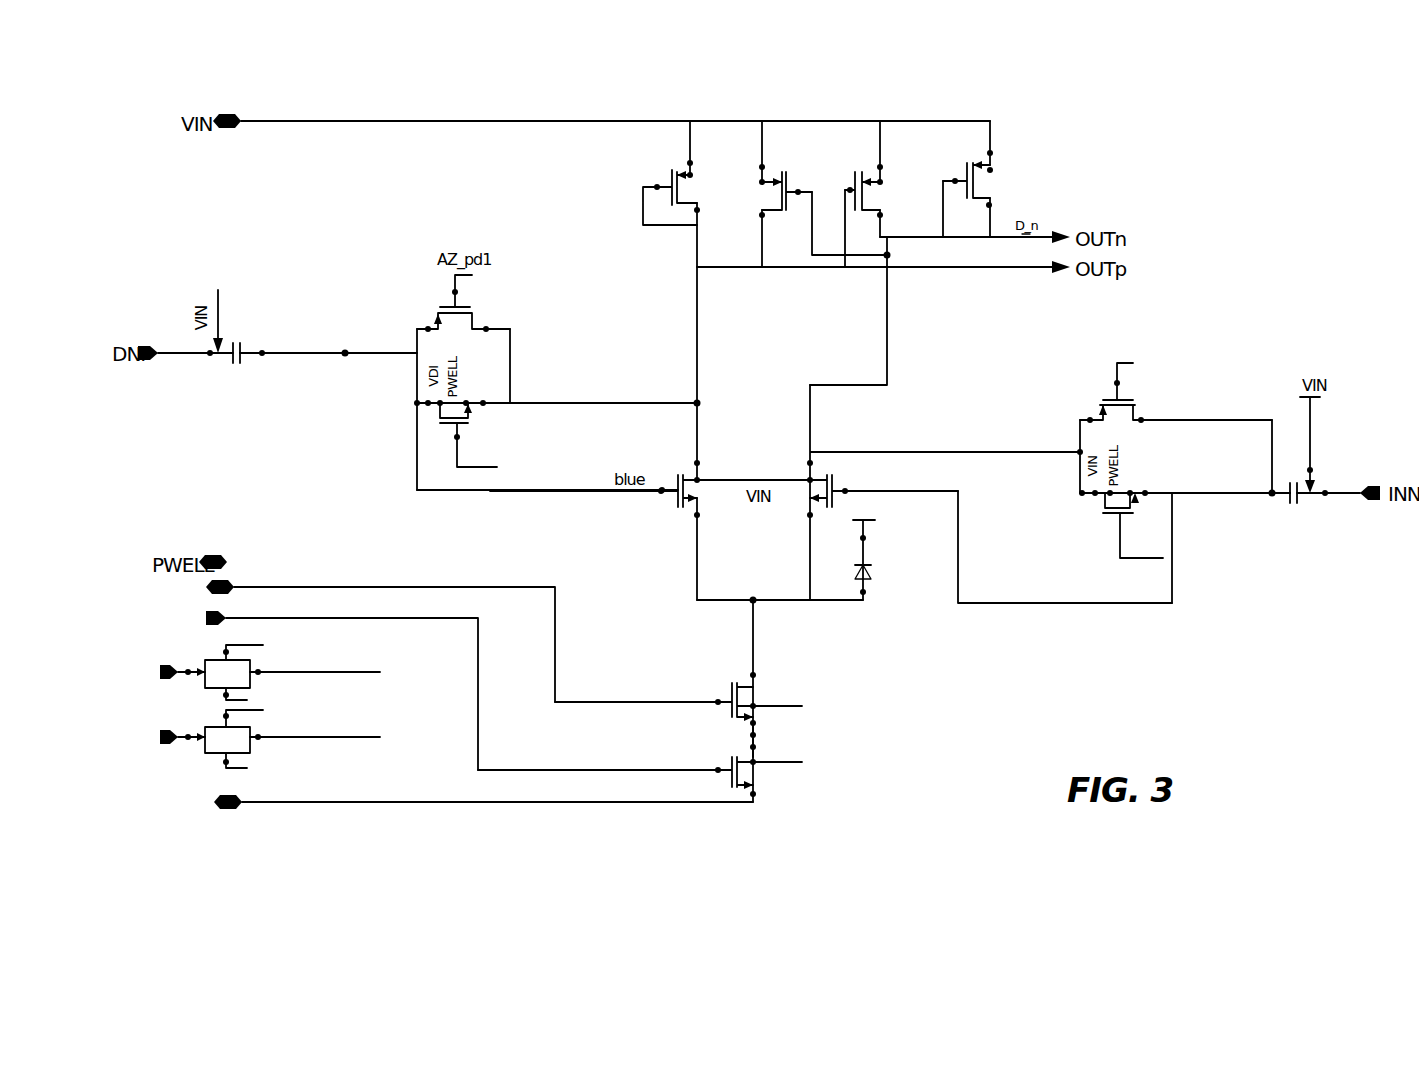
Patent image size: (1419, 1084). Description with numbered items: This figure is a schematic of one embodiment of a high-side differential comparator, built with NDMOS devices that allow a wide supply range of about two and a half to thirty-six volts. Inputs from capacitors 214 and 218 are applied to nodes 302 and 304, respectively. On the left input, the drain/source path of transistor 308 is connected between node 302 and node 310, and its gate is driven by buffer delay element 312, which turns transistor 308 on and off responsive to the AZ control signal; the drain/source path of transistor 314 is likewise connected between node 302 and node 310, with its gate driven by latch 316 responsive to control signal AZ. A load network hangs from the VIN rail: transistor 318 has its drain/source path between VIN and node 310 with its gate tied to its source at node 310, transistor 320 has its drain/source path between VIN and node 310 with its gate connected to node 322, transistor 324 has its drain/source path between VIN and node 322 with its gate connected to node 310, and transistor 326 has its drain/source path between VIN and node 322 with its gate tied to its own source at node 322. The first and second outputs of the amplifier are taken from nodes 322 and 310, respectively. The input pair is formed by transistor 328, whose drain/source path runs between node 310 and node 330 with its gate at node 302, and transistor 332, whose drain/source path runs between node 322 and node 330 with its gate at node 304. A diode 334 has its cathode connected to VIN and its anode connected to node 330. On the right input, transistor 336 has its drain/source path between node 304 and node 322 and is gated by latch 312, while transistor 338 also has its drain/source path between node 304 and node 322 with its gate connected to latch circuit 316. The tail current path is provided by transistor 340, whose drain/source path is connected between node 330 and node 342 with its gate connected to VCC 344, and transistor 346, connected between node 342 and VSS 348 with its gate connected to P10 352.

The capacitor 214 is at (228, 370).
The capacitor 218 is at (1297, 508).
The node 302 is at (345, 350).
The node 304 is at (1270, 498).
The transistor 308 is at (483, 313).
The node 310 is at (699, 402).
The buffer delay element 312 is at (252, 663).
The transistor 314 is at (478, 422).
The latch 316 is at (291, 763).
The transistor 318 is at (655, 172).
The transistor 320 is at (790, 193).
The node 322 is at (890, 254).
The transistor 324 is at (886, 196).
The transistor 326 is at (1000, 184).
The transistor 328 is at (700, 497).
The node 330 is at (750, 604).
The transistor 332 is at (835, 476).
The diode 334 is at (869, 577).
The transistor 336 is at (1143, 400).
The transistor 338 is at (1108, 520).
The transistor 340 is at (753, 690).
The node 342 is at (755, 733).
The VCC 344 is at (232, 580).
The transistor 346 is at (762, 778).
The VSS 348 is at (240, 810).
The P10 352 is at (226, 614).